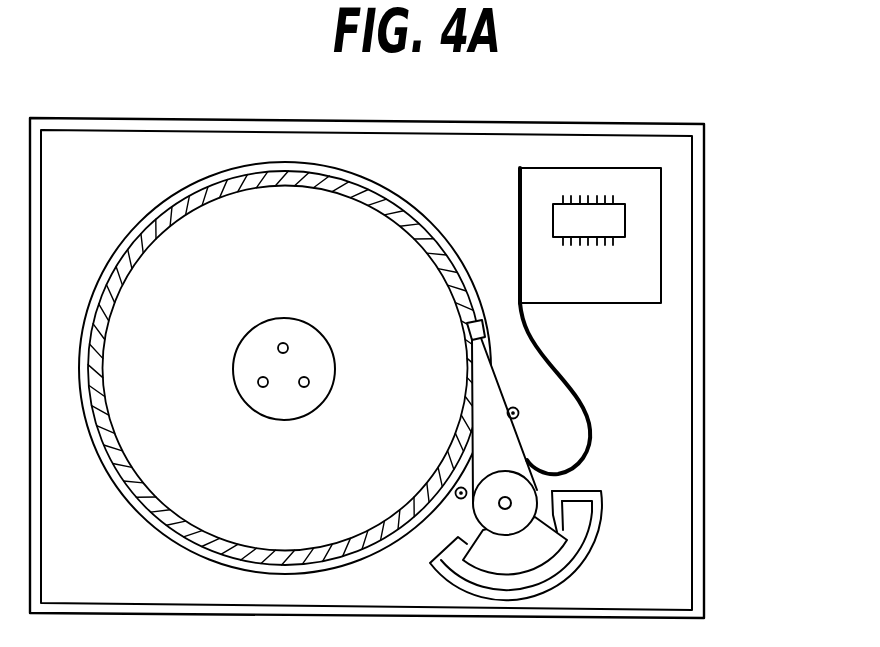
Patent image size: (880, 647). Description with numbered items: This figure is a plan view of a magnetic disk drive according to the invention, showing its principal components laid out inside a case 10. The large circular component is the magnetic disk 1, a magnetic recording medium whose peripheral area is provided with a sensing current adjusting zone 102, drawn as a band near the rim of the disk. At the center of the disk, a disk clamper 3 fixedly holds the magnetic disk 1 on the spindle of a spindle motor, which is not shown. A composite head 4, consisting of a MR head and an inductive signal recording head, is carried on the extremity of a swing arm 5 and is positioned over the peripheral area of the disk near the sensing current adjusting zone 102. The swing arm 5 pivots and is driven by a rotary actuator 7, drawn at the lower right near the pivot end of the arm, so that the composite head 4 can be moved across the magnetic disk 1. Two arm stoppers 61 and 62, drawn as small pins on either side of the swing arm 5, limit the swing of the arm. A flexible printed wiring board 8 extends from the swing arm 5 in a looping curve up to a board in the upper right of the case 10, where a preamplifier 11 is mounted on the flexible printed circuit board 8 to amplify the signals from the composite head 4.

The magnetic disk 1 is at (400, 197).
The sensing current adjusting zone 102 is at (337, 193).
The disk clamper 3 is at (337, 356).
The composite head 4 is at (468, 339).
The swing arm 5 is at (523, 455).
The arm stopper 61 is at (518, 411).
The arm stopper 62 is at (458, 500).
The rotary actuator 7 is at (602, 512).
The flexible printed wiring board 8 is at (585, 400).
The case 10 is at (708, 192).
The preamplifier 11 is at (557, 198).